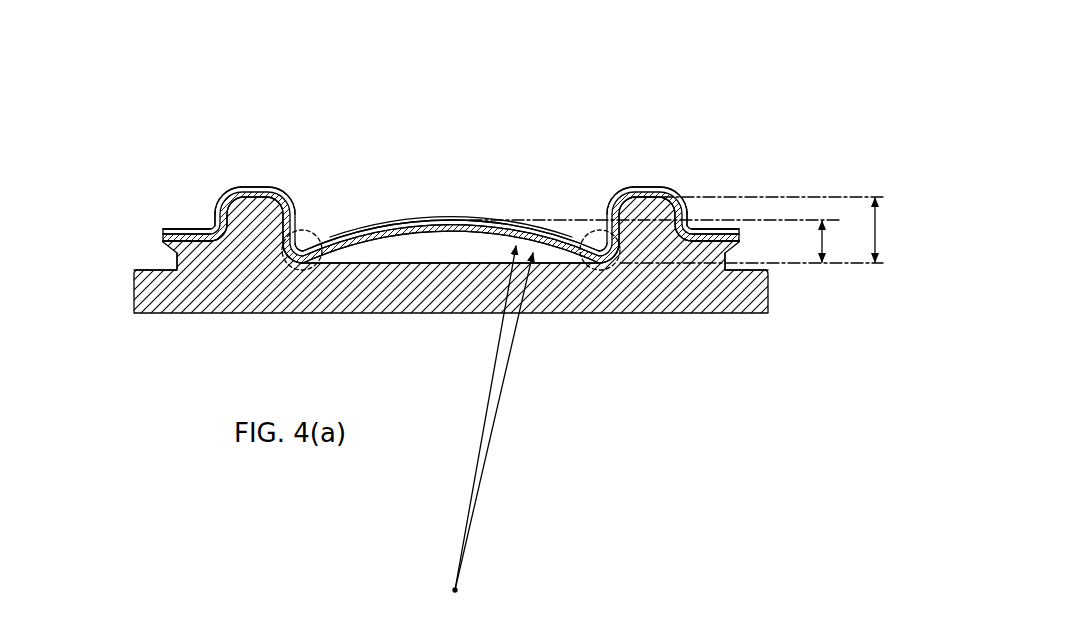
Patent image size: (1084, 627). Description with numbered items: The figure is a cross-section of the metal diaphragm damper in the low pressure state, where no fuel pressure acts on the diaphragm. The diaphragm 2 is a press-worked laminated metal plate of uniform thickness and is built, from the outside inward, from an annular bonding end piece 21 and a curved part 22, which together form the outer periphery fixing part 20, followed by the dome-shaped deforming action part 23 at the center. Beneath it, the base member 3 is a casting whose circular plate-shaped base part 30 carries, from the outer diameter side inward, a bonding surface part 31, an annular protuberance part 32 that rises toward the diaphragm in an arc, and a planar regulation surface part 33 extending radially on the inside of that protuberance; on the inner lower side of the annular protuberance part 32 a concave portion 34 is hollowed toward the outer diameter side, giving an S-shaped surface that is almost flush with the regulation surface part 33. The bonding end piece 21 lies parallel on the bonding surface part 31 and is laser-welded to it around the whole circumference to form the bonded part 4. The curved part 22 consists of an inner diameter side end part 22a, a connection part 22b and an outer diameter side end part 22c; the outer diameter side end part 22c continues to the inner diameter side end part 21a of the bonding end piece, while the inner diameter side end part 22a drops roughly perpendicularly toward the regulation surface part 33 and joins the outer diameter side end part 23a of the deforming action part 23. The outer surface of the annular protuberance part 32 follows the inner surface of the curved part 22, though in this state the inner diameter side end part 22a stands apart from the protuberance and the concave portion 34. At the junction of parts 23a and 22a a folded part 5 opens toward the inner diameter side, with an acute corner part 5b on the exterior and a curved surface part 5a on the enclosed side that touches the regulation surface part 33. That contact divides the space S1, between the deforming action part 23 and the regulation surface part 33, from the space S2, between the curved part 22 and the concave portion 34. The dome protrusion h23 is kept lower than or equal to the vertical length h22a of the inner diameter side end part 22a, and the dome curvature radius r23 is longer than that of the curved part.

The diaphragm 2 is at (290, 80).
The base member 3 is at (123, 293).
The bonded part 4 is at (162, 240).
The folded part 5 is at (294, 276).
The curved surface part 5a is at (303, 264).
The corner part 5b is at (300, 246).
The outer periphery fixing part 20 is at (212, 168).
The bonding end piece 21 is at (165, 228).
The inner diameter side end part of the bonding end piece 21a is at (184, 220).
The curved part 22 is at (255, 178).
The inner diameter side end part 22a is at (265, 187).
The connection part 22b is at (248, 187).
The outer diameter side end part 22c is at (214, 212).
The deforming action part 23 is at (433, 216).
The outer diameter side end part of the deforming action part 23a is at (332, 236).
The base part 30 is at (145, 303).
The bonding surface part 31 is at (170, 252).
The annular protuberance part 32 is at (230, 226).
The regulation surface part 33 is at (377, 265).
The concave portion 34 is at (258, 196).
The space S1 is at (488, 256).
The space S2 is at (277, 264).
The curvature radius of the deforming action part r23 is at (496, 419).
The protrusion amount of the deforming action part h23 is at (666, 237).
The vertical length of the inner diameter side end part h22a is at (773, 230).